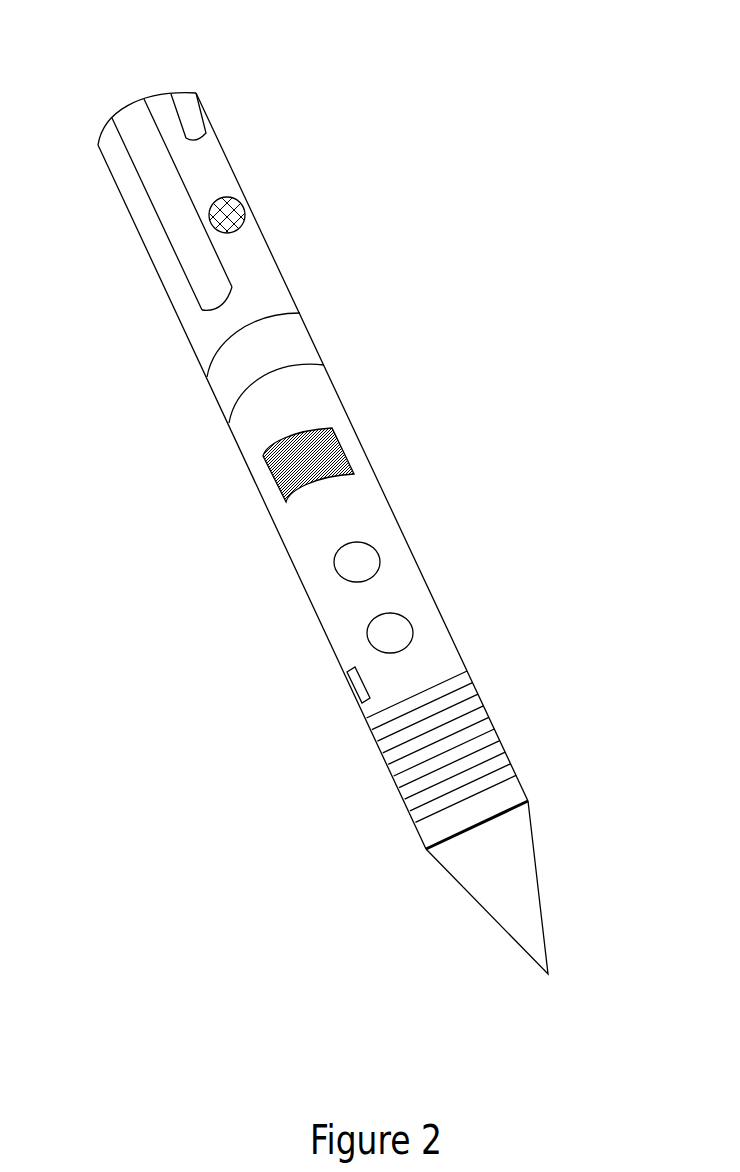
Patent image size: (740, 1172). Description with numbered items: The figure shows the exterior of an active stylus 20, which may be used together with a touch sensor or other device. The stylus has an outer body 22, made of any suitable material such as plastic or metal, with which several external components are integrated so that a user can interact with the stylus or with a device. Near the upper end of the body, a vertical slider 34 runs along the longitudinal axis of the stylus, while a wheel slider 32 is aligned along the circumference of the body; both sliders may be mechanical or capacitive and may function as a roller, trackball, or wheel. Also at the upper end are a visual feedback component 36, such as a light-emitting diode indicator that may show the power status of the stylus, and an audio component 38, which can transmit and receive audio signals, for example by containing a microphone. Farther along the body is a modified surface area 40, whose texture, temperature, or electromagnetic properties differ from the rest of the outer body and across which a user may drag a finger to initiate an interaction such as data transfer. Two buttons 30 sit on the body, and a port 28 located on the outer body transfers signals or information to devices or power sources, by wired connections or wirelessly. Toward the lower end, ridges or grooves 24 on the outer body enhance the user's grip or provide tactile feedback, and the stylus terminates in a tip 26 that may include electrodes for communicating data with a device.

The active stylus 20 is at (345, 533).
The outer body 22 is at (386, 504).
The ridges or grooves 24 is at (463, 707).
The tip 26 is at (531, 870).
The port 28 is at (347, 685).
The buttons 30 is at (370, 627).
The wheel slider 32 is at (222, 371).
The vertical slider 34 is at (152, 180).
The visual feedback component 36 is at (174, 103).
The audio component 38 is at (233, 198).
The modified surface area 40 is at (300, 446).